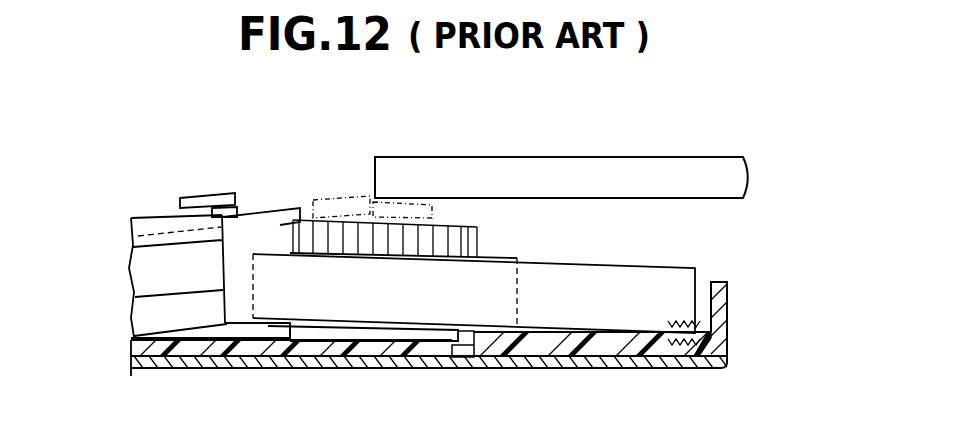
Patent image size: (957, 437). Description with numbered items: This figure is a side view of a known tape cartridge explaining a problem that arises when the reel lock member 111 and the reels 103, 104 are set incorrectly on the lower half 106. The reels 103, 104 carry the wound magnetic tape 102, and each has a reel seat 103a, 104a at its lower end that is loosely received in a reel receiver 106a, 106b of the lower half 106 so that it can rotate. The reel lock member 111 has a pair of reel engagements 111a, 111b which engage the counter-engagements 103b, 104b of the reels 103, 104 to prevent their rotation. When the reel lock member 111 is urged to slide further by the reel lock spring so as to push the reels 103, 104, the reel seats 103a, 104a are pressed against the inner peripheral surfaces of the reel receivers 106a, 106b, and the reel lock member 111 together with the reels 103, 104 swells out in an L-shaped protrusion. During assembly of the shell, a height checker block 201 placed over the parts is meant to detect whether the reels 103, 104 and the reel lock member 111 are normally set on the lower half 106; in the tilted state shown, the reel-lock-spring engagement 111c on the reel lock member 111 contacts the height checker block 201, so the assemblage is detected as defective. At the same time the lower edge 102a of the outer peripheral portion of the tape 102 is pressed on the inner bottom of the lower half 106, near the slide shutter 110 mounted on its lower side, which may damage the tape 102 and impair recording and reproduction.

The height checker block 201 is at (622, 180).
The reel lock member 111 is at (160, 212).
The reel-lock-spring engagement 111c is at (208, 197).
The reel engagement 111a is at (307, 156).
The reel engagement 111b is at (272, 217).
The counter-engagement 103b is at (440, 172).
The counter-engagement 104b is at (377, 242).
The reel 103 is at (475, 271).
The reel 104 is at (514, 250).
The reel seat 103a is at (321, 374).
The reel seat 104a is at (343, 330).
The reel receiver 106a is at (463, 381).
The reel receiver 106b is at (457, 346).
The lower half 106 is at (733, 306).
The magnetic tape 102 is at (655, 312).
The lower edge 102a is at (711, 326).
The slide shutter 110 is at (593, 363).